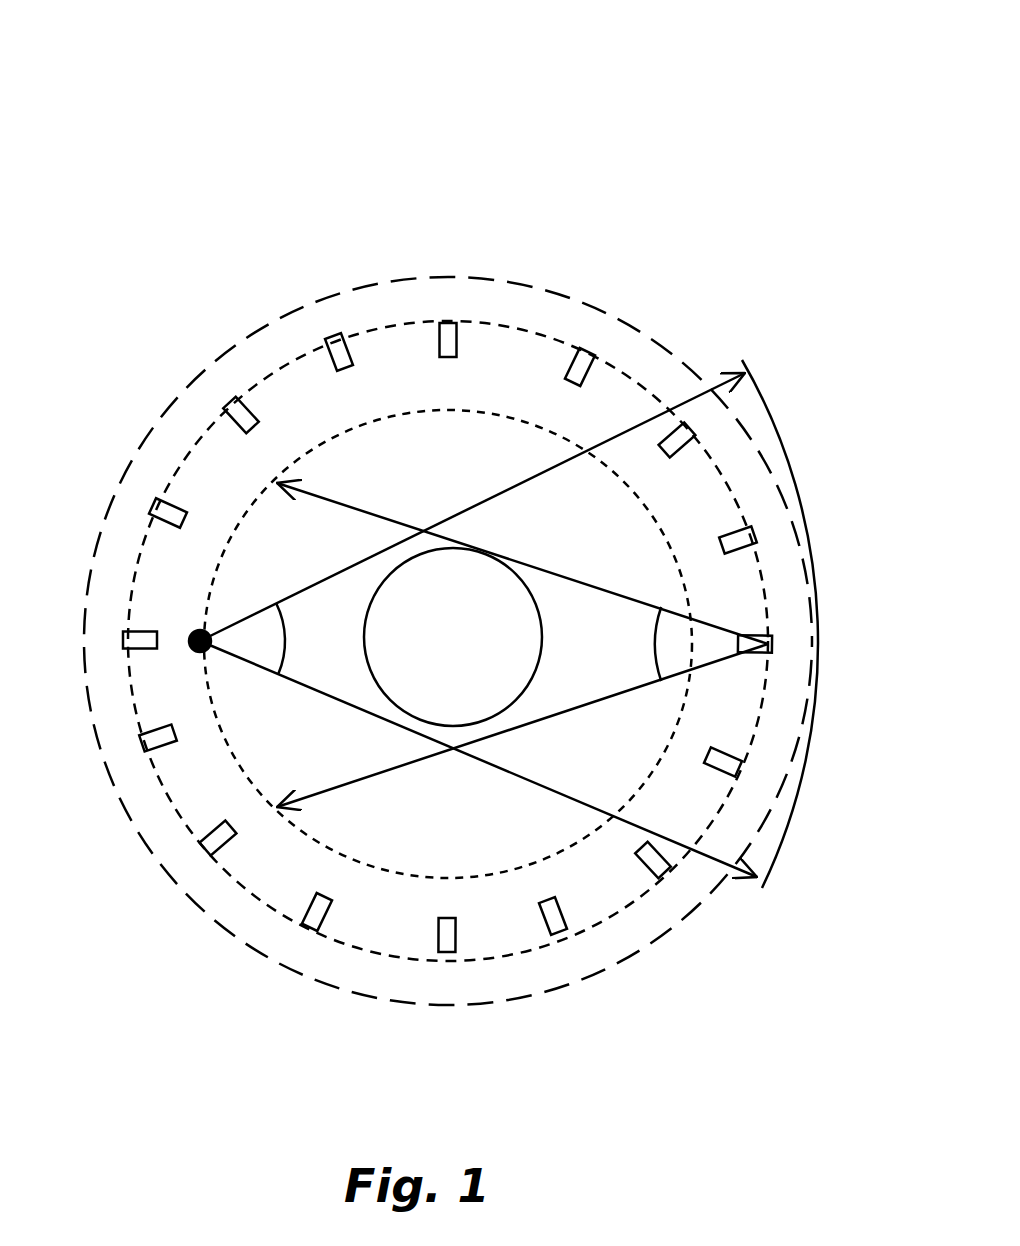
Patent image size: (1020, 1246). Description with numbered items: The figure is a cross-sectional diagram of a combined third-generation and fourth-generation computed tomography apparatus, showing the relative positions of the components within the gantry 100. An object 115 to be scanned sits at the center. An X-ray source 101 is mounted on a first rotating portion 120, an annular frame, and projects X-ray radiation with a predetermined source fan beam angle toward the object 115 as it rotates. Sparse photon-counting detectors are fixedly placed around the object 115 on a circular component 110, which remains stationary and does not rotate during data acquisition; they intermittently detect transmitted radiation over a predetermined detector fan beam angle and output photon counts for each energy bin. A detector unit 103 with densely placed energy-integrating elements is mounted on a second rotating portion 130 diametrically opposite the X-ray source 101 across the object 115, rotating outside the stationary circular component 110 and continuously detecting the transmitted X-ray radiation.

The gantry 100 is at (464, 112).
The X-ray source 101 is at (198, 650).
The detector unit 103 is at (770, 406).
The circular component 110 is at (603, 917).
The object 115 is at (527, 680).
The first rotating portion 120 is at (492, 410).
The second rotating portion 130 is at (713, 892).